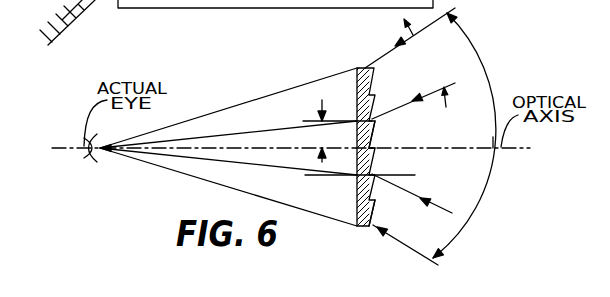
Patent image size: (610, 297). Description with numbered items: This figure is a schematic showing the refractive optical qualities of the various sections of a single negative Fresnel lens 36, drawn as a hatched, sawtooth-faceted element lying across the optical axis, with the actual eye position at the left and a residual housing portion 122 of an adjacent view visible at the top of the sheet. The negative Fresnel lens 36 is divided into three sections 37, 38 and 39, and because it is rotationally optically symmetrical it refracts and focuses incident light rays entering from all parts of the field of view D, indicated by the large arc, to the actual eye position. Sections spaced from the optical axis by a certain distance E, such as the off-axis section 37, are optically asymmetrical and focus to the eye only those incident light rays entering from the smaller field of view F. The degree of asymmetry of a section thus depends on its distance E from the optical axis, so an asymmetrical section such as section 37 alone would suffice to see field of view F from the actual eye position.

The negative Fresnel lens 36 is at (319, 75).
The off-axis lens section 37 is at (374, 78).
The lens section 38 is at (372, 140).
The lens section 39 is at (377, 222).
The housing 122 is at (150, 8).
The distance from the optical axis E is at (359, 137).
The field of view of the off-axis section F is at (426, 63).
The field of view D is at (465, 135).